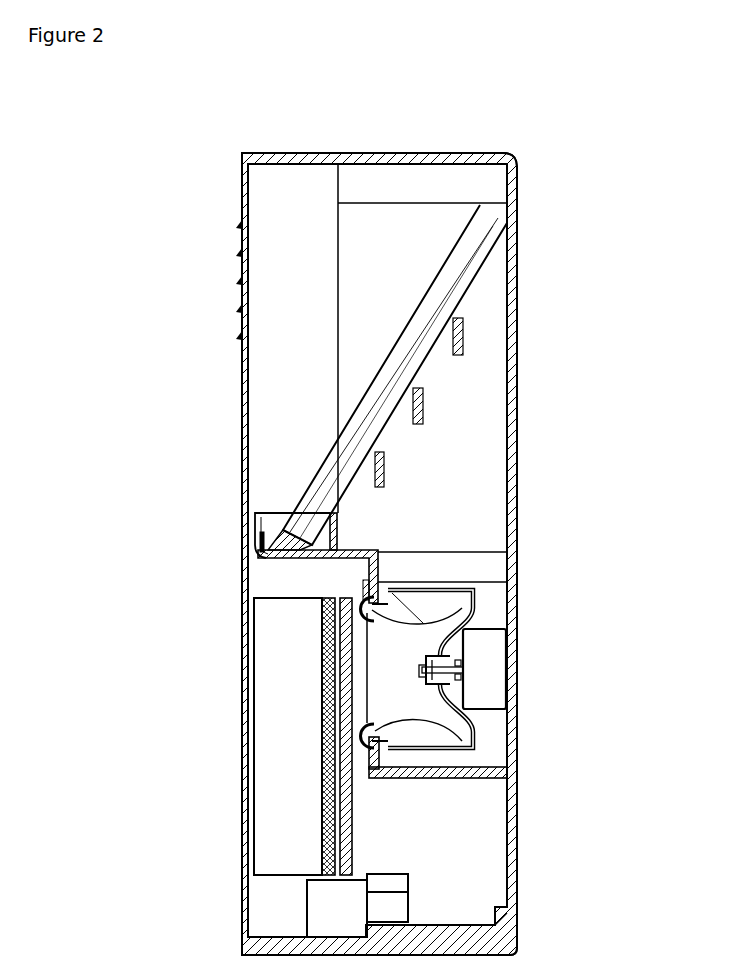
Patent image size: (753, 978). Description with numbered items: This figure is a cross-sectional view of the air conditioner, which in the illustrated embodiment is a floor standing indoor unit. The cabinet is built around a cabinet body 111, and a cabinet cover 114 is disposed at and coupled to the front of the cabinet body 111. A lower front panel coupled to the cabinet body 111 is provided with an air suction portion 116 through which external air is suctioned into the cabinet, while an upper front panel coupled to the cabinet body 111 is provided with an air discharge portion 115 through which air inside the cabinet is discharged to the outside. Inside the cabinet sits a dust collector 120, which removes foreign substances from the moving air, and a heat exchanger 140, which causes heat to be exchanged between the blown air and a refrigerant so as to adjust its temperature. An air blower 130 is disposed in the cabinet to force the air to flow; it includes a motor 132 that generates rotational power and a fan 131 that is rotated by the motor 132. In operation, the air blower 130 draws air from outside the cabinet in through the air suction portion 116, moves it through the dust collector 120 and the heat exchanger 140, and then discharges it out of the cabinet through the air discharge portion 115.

The cabinet body 111 is at (490, 153).
The cabinet cover 114 is at (241, 418).
The air discharge portion 115 is at (240, 239).
The air suction portion 116 is at (242, 818).
The dust collector 120 is at (268, 637).
The air blower 130 is at (515, 684).
The fan 131 is at (445, 738).
The motor 132 is at (487, 675).
The heat exchanger 140 is at (470, 255).